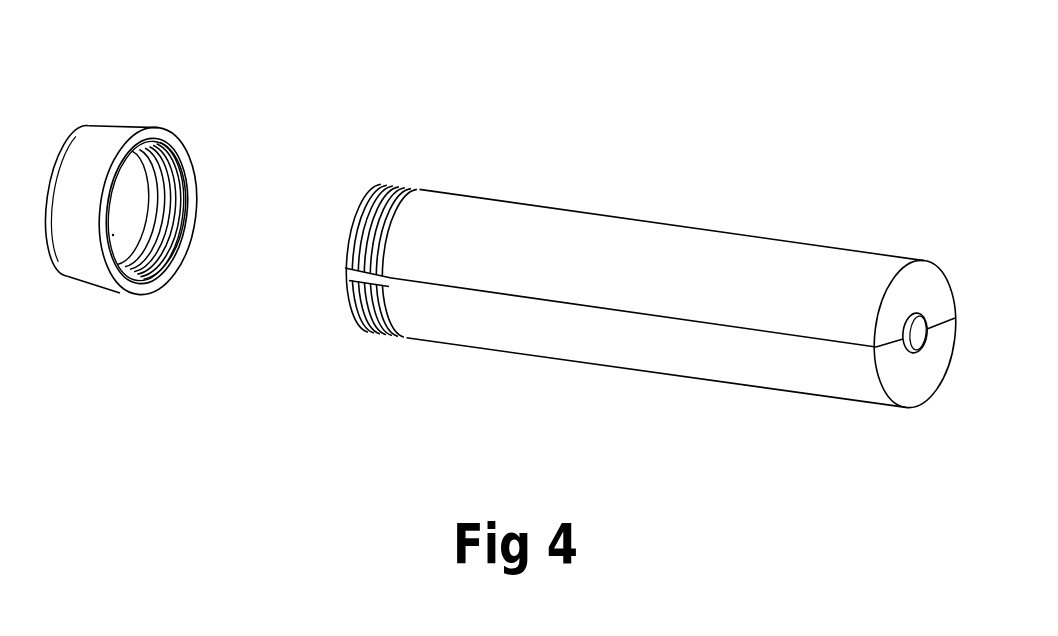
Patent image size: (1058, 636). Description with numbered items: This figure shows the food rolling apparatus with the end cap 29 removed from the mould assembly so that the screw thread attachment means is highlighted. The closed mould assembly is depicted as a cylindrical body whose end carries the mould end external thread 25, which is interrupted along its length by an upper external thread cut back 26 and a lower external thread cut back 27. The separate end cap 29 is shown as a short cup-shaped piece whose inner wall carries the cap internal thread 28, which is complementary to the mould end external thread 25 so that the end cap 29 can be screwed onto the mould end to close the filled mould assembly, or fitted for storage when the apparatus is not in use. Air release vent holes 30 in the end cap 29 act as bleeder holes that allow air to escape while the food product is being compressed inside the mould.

The mould end external thread 25 is at (403, 183).
The upper external thread cut back 26 is at (346, 268).
The lower external thread cut back 27 is at (348, 280).
The cap internal thread 28 is at (170, 238).
The end cap 29 is at (125, 131).
The air release vent holes 30 is at (124, 197).